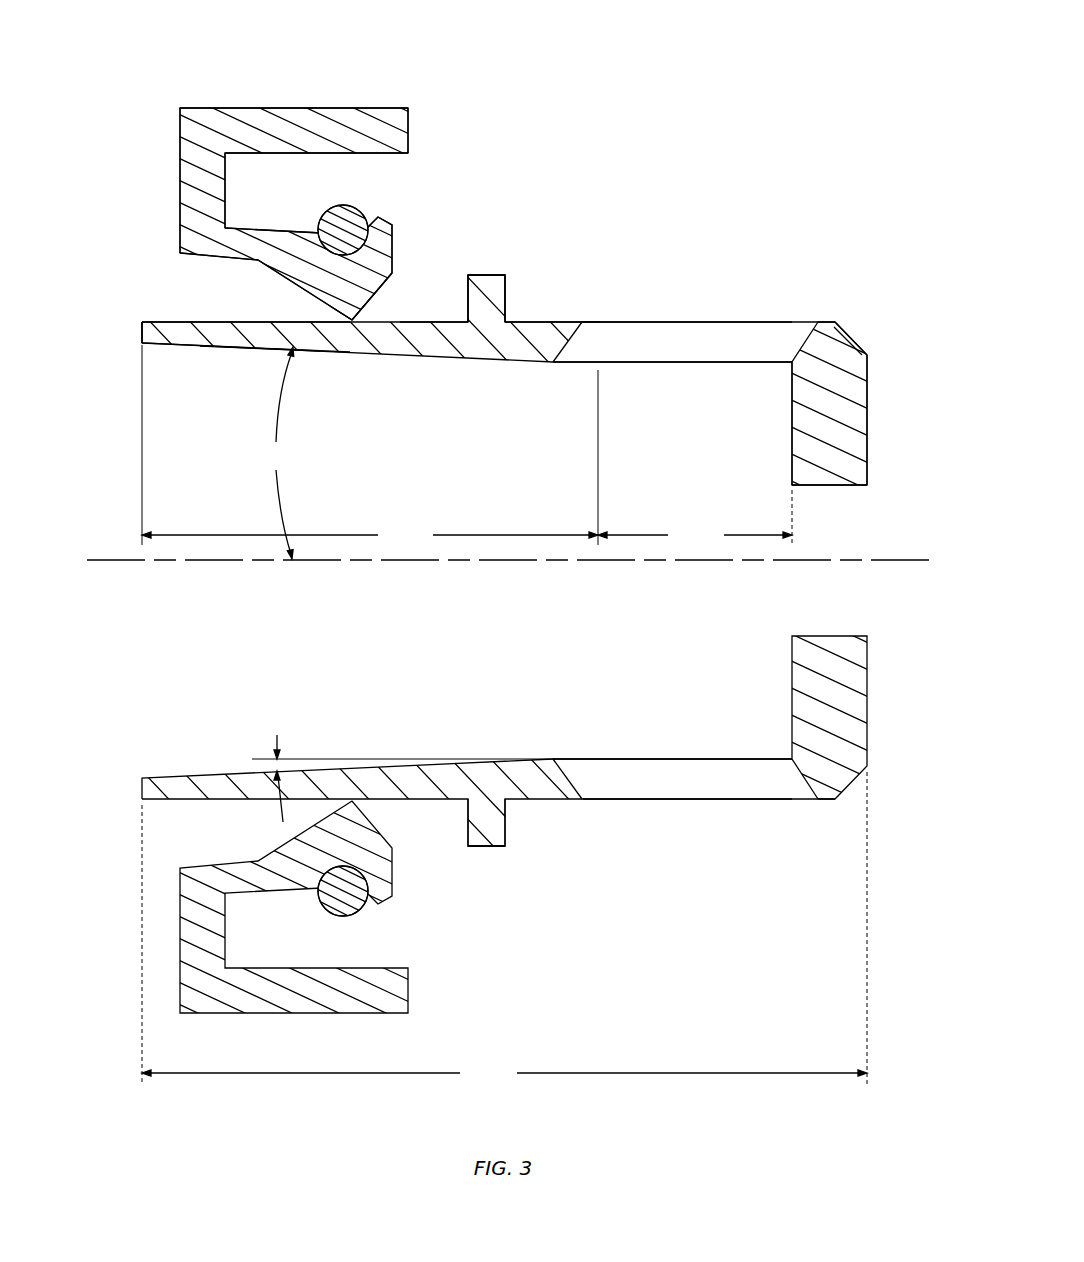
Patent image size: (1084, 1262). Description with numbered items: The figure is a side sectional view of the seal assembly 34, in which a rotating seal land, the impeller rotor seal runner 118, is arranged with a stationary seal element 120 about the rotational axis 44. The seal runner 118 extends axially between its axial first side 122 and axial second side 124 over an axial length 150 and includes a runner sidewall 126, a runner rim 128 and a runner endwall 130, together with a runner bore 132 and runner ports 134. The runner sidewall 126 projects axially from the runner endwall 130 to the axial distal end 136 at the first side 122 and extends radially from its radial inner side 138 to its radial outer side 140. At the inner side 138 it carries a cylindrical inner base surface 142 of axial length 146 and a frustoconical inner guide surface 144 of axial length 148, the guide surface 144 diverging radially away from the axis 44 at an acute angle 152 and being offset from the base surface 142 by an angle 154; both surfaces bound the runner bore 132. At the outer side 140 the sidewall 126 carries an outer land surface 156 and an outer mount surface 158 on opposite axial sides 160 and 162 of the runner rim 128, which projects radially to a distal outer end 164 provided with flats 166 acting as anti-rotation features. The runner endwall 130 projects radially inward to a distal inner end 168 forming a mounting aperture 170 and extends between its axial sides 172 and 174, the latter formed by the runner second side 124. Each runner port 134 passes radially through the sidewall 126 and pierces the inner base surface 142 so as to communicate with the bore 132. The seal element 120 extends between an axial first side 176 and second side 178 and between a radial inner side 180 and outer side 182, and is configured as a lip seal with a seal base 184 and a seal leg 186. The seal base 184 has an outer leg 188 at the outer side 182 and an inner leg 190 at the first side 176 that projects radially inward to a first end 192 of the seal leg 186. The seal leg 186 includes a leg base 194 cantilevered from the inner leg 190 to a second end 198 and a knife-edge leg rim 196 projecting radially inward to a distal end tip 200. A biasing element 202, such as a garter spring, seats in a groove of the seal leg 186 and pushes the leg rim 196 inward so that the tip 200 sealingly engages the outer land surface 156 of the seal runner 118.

The seal assembly 34 is at (781, 95).
The rotational axis 44 is at (105, 560).
The impeller rotor seal runner 118 is at (878, 340).
The stationary seal element 120 is at (421, 92).
The axial first side of the seal runner 122 is at (142, 338).
The axial second side of the seal runner 124 is at (867, 440).
The runner sidewall 126 is at (407, 345).
The runner rim 128 is at (500, 295).
The runner endwall 130 is at (848, 410).
The runner bore 132 is at (366, 508).
The runner port 134 is at (660, 348).
The axial distal end of the seal runner 136 is at (142, 338).
The radial inner side of the runner sidewall 138 is at (208, 345).
The radial outer side of the runner sidewall 140 is at (212, 320).
The inner base surface 142 is at (700, 365).
The inner guide surface 144 is at (480, 362).
The axial length of the inner base surface 146 is at (695, 518).
The axial length of the inner guide surface 148 is at (370, 535).
The axial length of the seal runner 150 is at (504, 929).
The offset angle 152 is at (275, 453).
The offset angle 154 is at (275, 733).
The outer land surface 156 is at (422, 320).
The outer mount surface 158 is at (553, 320).
The axial first side of the runner rim 160 is at (466, 282).
The axial second side of the runner rim 162 is at (506, 285).
The radial distal outer end of the runner rim 164 is at (483, 275).
The flat 166 is at (488, 848).
The radial distal inner end of the runner endwall 168 is at (845, 487).
The mounting aperture 170 is at (812, 606).
The axial first side of the runner endwall 172 is at (792, 460).
The axial second side of the runner endwall 174 is at (867, 460).
The axial first side of the seal element 176 is at (180, 128).
The axial second side of the seal element 178 is at (408, 128).
The radial inner side of the seal element 180 is at (362, 326).
The radial outer side of the seal element 182 is at (353, 108).
The seal base 184 is at (148, 172).
The seal leg 186 is at (258, 347).
The outer leg 188 is at (258, 120).
The inner leg 190 is at (180, 216).
The first end of the seal leg 192 is at (183, 252).
The leg base 194 is at (282, 243).
The leg rim 196 is at (386, 300).
The second end of the seal leg 198 is at (393, 246).
The distal end tip 200 is at (348, 326).
The biasing element 202 is at (343, 206).